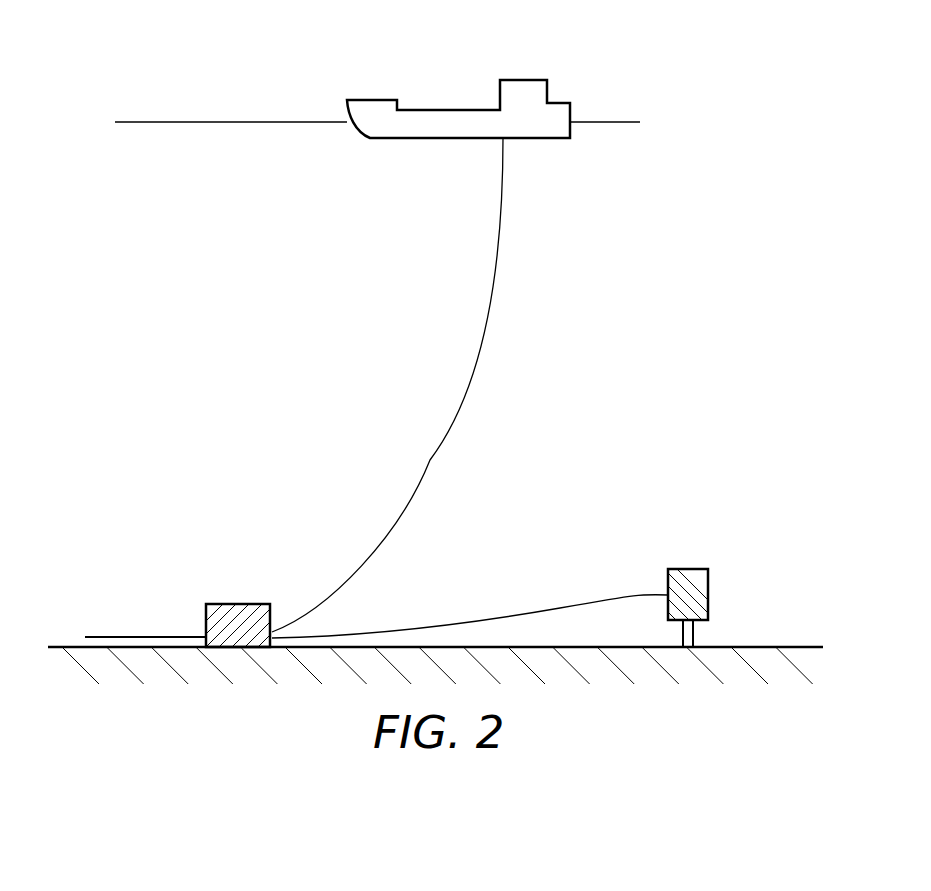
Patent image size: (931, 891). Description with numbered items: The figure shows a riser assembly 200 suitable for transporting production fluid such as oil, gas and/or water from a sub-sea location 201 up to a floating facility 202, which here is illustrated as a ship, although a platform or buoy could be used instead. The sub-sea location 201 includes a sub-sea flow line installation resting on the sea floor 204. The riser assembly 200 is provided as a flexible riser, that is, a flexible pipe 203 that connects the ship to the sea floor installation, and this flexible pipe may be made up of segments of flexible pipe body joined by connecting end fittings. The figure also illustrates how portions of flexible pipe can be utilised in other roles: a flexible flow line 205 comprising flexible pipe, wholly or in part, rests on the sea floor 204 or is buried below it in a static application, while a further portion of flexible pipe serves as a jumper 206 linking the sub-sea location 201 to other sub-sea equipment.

The riser assembly 200 is at (597, 255).
The sub-sea location 201 is at (237, 604).
The floating facility 202 is at (372, 100).
The flexible pipe 203 is at (430, 458).
The sea floor 204 is at (771, 647).
The flexible flow line 205 is at (130, 637).
The jumper 206 is at (617, 595).